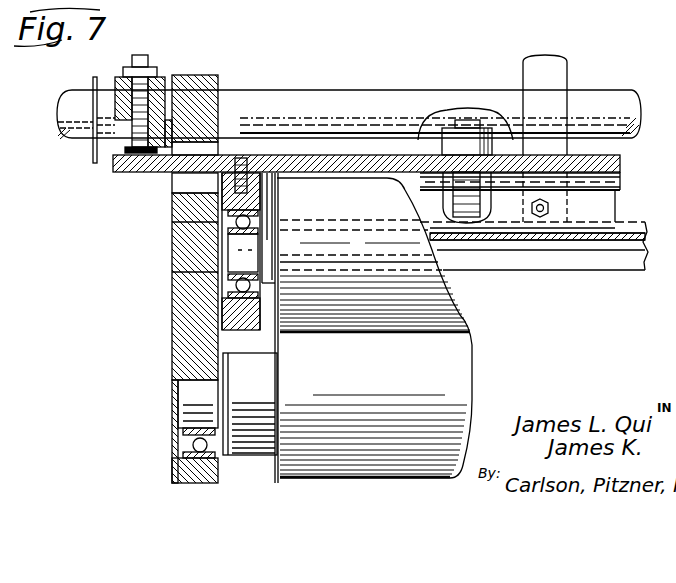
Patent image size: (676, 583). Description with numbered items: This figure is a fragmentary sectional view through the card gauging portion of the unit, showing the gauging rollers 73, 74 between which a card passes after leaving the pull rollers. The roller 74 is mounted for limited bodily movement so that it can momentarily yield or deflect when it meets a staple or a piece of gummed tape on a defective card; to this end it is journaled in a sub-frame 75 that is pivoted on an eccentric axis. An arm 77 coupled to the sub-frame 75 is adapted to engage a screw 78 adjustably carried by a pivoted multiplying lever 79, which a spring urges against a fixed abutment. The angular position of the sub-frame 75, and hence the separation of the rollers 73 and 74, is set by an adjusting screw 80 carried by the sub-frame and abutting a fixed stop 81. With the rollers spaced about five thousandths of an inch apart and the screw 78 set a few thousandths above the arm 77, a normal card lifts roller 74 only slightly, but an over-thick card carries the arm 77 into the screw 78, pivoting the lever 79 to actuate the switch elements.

The gauging roller 73 is at (455, 342).
The gauging roller 74 is at (443, 303).
The sub-frame 75 is at (230, 318).
The arm 77 is at (118, 173).
The screw 78 is at (147, 55).
The multiplying lever 79 is at (158, 83).
The adjusting screw 80 is at (468, 120).
The fixed stop 81 is at (578, 263).